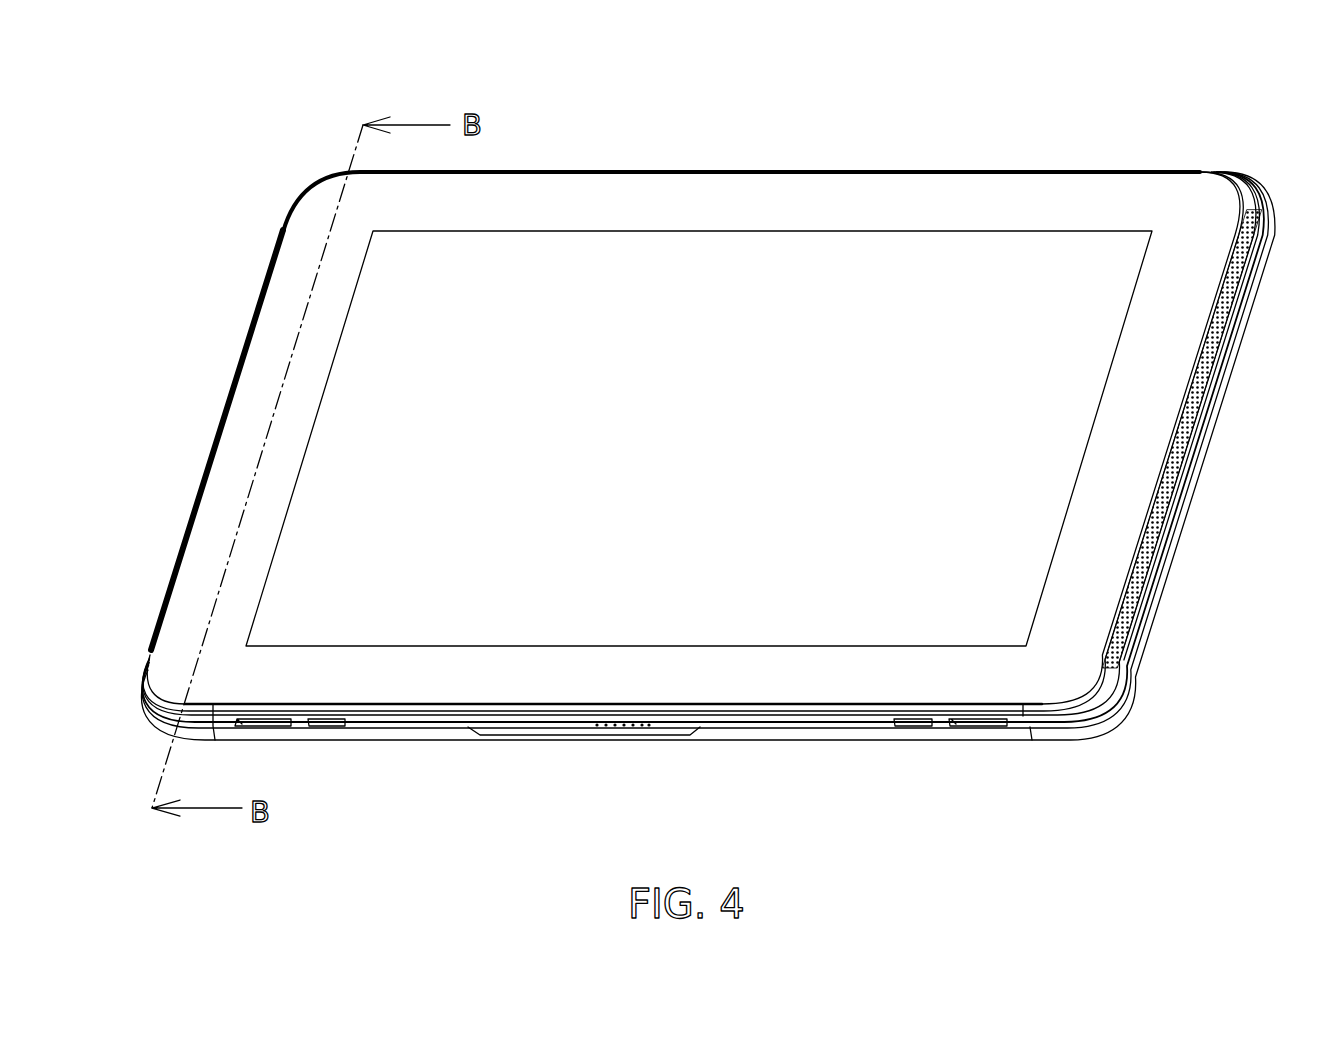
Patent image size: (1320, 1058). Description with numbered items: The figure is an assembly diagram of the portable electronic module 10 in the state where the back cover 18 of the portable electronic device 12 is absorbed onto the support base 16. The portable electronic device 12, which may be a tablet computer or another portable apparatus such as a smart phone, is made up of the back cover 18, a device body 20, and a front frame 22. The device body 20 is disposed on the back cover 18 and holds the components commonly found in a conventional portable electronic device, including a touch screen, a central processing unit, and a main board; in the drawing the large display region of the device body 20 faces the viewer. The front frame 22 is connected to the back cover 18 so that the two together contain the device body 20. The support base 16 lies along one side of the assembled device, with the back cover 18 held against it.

The portable electronic module 10 is at (700, 403).
The portable electronic device 12 is at (830, 150).
The support base 16 is at (1187, 570).
The back cover 18 is at (1100, 700).
The device body 20 is at (669, 258).
The front frame 22 is at (235, 445).